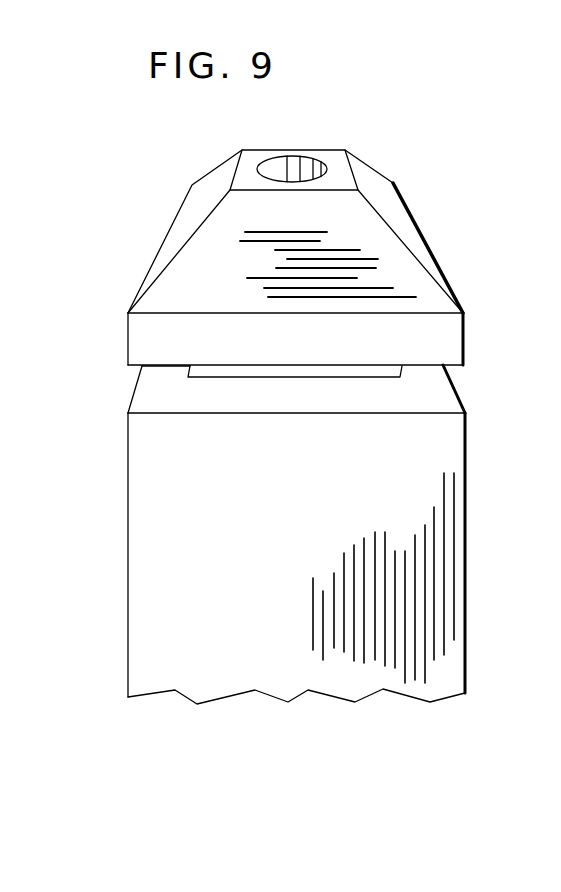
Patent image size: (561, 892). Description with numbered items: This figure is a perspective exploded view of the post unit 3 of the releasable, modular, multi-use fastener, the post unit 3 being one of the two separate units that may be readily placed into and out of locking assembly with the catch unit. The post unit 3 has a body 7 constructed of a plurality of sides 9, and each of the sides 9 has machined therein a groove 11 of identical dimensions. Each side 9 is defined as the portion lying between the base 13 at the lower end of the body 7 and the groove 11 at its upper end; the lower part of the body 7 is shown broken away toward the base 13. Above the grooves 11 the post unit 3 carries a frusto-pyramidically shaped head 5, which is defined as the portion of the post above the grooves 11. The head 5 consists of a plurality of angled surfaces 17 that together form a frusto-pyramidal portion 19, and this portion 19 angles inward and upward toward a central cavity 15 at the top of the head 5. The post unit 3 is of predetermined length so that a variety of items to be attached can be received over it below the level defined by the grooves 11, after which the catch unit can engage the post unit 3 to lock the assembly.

The post unit 3 is at (300, 223).
The head 5 is at (425, 252).
The body 7 is at (405, 477).
The sides 9 is at (465, 563).
The groove 11 is at (430, 387).
The base 13 is at (347, 702).
The central cavity 15 is at (292, 168).
The angled surfaces 17 is at (222, 165).
The frusto-pyramidal portion 19 is at (213, 280).